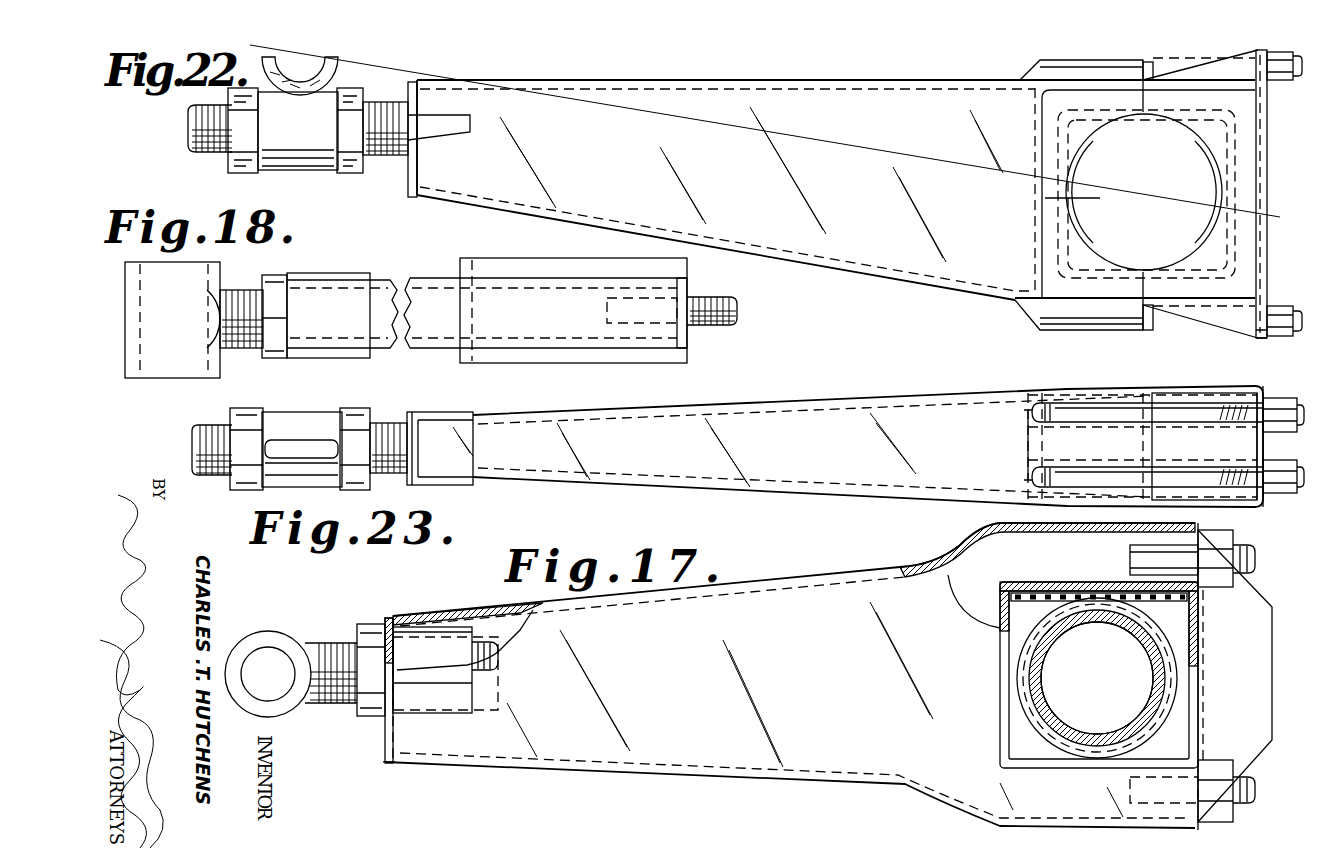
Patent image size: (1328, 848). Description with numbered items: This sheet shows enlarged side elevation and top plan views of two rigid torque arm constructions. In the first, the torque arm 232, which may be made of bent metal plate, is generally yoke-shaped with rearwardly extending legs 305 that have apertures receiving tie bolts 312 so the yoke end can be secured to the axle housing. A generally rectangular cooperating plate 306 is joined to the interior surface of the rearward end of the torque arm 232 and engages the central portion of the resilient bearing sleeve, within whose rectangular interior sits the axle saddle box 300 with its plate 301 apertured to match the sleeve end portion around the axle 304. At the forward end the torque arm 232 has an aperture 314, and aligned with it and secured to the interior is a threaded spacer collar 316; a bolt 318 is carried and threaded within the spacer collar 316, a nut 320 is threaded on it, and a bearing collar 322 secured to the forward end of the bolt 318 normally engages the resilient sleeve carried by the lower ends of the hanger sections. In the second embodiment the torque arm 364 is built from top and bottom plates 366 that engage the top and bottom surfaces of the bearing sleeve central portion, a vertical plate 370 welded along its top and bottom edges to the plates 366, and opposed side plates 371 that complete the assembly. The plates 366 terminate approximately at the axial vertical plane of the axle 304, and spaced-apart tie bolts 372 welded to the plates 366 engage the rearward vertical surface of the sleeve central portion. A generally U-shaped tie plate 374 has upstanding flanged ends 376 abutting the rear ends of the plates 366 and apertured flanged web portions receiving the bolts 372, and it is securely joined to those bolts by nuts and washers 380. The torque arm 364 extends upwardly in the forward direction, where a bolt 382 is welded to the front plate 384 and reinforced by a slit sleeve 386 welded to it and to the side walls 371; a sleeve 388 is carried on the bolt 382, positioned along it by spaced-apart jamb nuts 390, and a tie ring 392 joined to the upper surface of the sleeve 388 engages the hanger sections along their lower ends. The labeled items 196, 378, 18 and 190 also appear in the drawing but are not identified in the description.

In FIG. 22, the tie ring 392 is at (327, 54).
In FIG. 22, the jamb nuts 390 is at (355, 90).
In FIG. 22, the sleeve 388 is at (313, 160).
In FIG. 22, the slit sleeve 386 is at (437, 115).
In FIG. 22, the front plate 384 is at (413, 170).
In FIG. 22, the bolt 382 is at (393, 153).
In FIG. 22, the side plates 371 is at (760, 196).
In FIG. 23, the side plates 371 is at (777, 400).
In FIG. 22, the top and bottom plates 366 is at (943, 78).
In FIG. 23, the top and bottom plates 366 is at (858, 446).
In FIG. 22, the torque arm 364 is at (890, 258).
In FIG. 22, the bearing housing plate 196 is at (1052, 242).
In FIG. 17, the bearing housing plate 196 is at (1048, 584).
In FIG. 22, the vertical plate 370 is at (1088, 199).
In FIG. 23, the vertical plate 370 is at (1040, 452).
In FIG. 22, the tie bolts 372 is at (1130, 45).
In FIG. 23, the tie bolts 372 is at (1030, 418).
In FIG. 22, the flanged ends 376 is at (1150, 64).
In FIG. 23, the flanged ends 376 is at (1150, 449).
In FIG. 22, the tie plate 374 is at (1263, 206).
In FIG. 23, the tie plate 374 is at (1268, 445).
In FIG. 22, the nuts and washers 380 is at (1272, 82).
In FIG. 23, the nuts and washers 380 is at (1293, 482).
In FIG. 22, the end cap plate 378 is at (1256, 340).
In FIG. 23, the end cap plate 378 is at (1193, 393).
In FIG. 18, the bearing collar 322 is at (188, 371).
In FIG. 17, the bearing collar 322 is at (287, 705).
In FIG. 18, the bolt 318 is at (245, 292).
In FIG. 18, the nut 320 is at (277, 357).
In FIG. 17, the nut 320 is at (367, 623).
In FIG. 18, the threaded spacer collar 316 is at (345, 277).
In FIG. 17, the threaded spacer collar 316 is at (467, 637).
In FIG. 18, the tie bolts 312 is at (740, 312).
In FIG. 18, the torque arm 232 is at (476, 370).
In FIG. 17, the torque arm 232 is at (644, 778).
In FIG. 17, the aperture 314 is at (405, 607).
In FIG. 17, the link 18 is at (347, 703).
In FIG. 17, the legs 305 is at (1023, 530).
In FIG. 17, the cooperating plate 306 is at (1015, 580).
In FIG. 17, the axle saddle box 300 is at (1082, 580).
In FIG. 17, the axle 304 is at (1083, 622).
In FIG. 17, the plate 301 is at (1153, 677).
In FIG. 17, the bearing 190 is at (1165, 708).